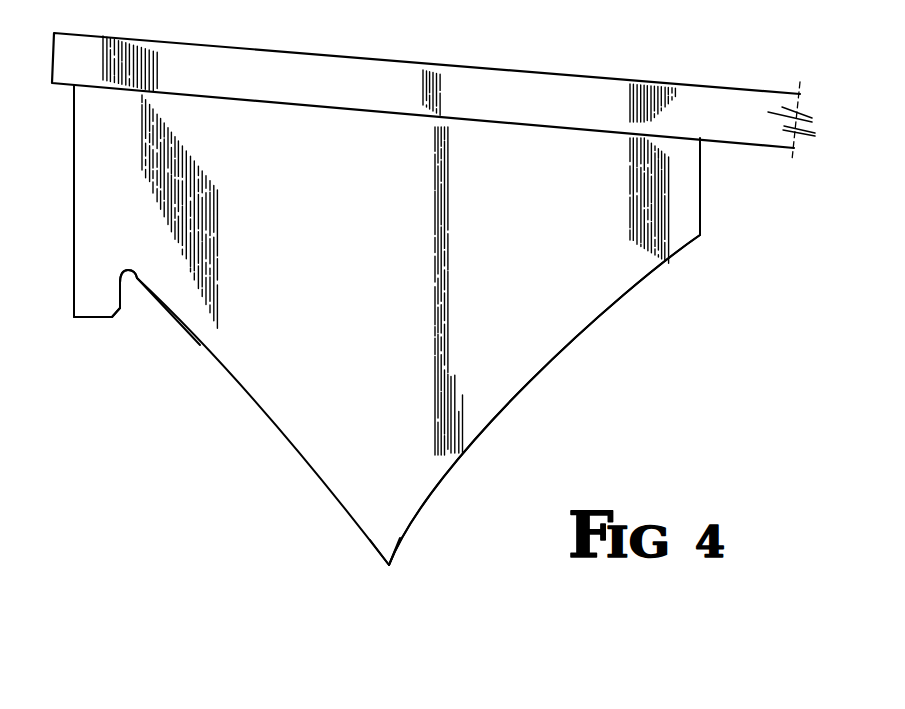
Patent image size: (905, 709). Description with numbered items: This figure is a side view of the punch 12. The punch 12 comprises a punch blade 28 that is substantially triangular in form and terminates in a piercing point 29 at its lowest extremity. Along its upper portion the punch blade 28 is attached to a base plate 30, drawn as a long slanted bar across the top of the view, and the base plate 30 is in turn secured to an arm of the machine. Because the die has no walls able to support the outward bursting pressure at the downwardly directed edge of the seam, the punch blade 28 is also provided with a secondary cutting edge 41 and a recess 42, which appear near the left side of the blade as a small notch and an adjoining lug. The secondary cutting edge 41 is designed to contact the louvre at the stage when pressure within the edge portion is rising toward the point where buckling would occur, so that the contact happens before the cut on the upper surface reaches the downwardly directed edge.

The punch 12 is at (192, 450).
The punch blade 28 is at (550, 360).
The piercing point 29 is at (389, 565).
The base plate 30 is at (473, 77).
The secondary cutting edge 41 is at (115, 314).
The recess 42 is at (133, 284).